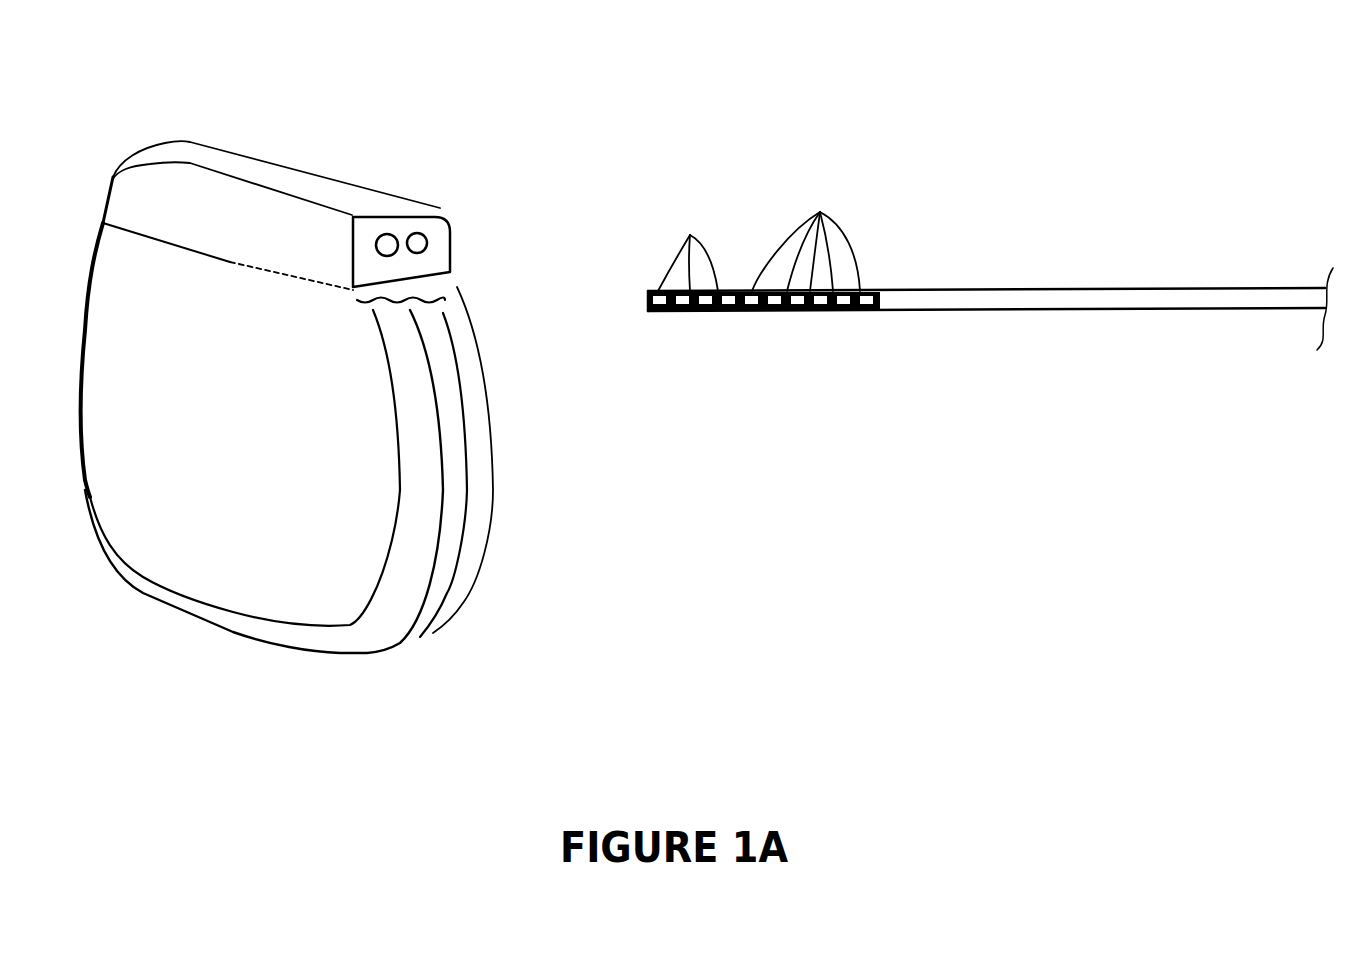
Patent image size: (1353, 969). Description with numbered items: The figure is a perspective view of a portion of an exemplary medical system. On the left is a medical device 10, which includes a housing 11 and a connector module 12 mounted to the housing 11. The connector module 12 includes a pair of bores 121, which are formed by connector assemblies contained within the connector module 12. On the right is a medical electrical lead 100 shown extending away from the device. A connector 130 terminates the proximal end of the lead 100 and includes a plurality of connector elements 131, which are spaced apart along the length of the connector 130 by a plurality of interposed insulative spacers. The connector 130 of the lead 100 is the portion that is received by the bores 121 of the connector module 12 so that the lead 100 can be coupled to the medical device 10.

The medical device 10 is at (45, 215).
The housing 11 is at (286, 461).
The connector module 12 is at (276, 179).
The bores 121 is at (405, 181).
The medical electrical lead 100 is at (988, 295).
The connector 130 is at (764, 350).
The connector elements 131 is at (759, 237).